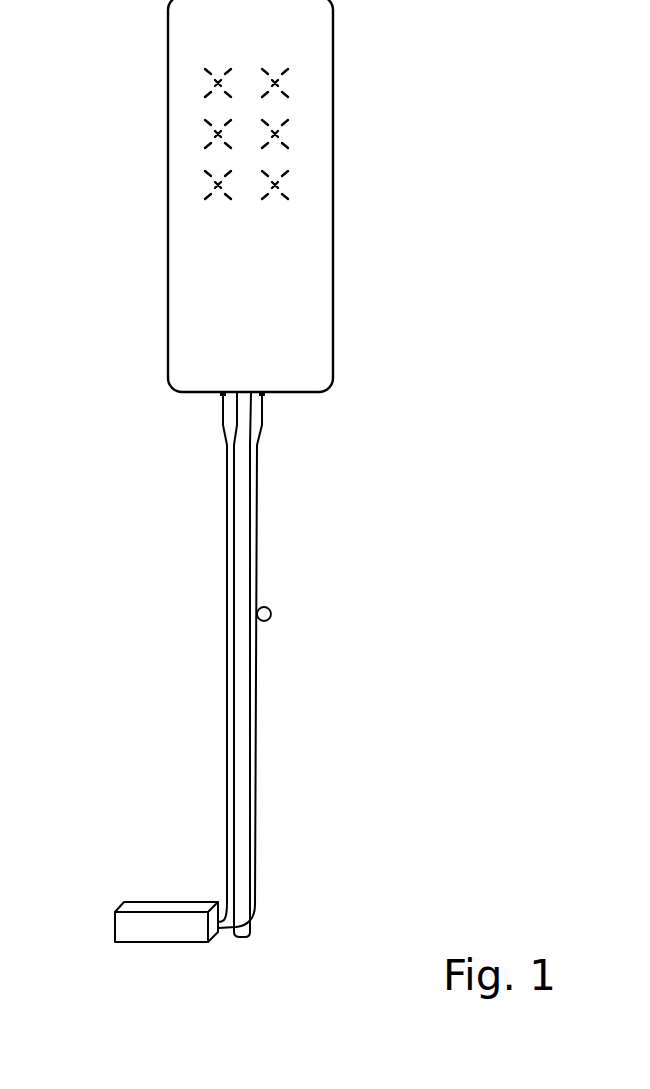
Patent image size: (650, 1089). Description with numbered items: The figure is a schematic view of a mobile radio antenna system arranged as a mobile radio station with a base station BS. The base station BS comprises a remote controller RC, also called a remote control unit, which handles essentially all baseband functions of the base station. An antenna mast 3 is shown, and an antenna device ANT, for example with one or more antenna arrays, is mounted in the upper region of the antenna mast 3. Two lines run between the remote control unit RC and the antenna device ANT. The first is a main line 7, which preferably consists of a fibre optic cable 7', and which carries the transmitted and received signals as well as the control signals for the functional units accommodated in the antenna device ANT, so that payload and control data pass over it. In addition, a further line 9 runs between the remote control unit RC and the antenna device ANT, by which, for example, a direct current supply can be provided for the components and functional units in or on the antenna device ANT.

The antenna device ANT is at (250, 198).
The further line 9 is at (227, 521).
The main line 7 is at (305, 660).
The fibre optic cable 7' is at (305, 660).
The antenna mast 3 is at (243, 752).
The mobile radio base station BS is at (114, 827).
The remote controller RC is at (127, 927).